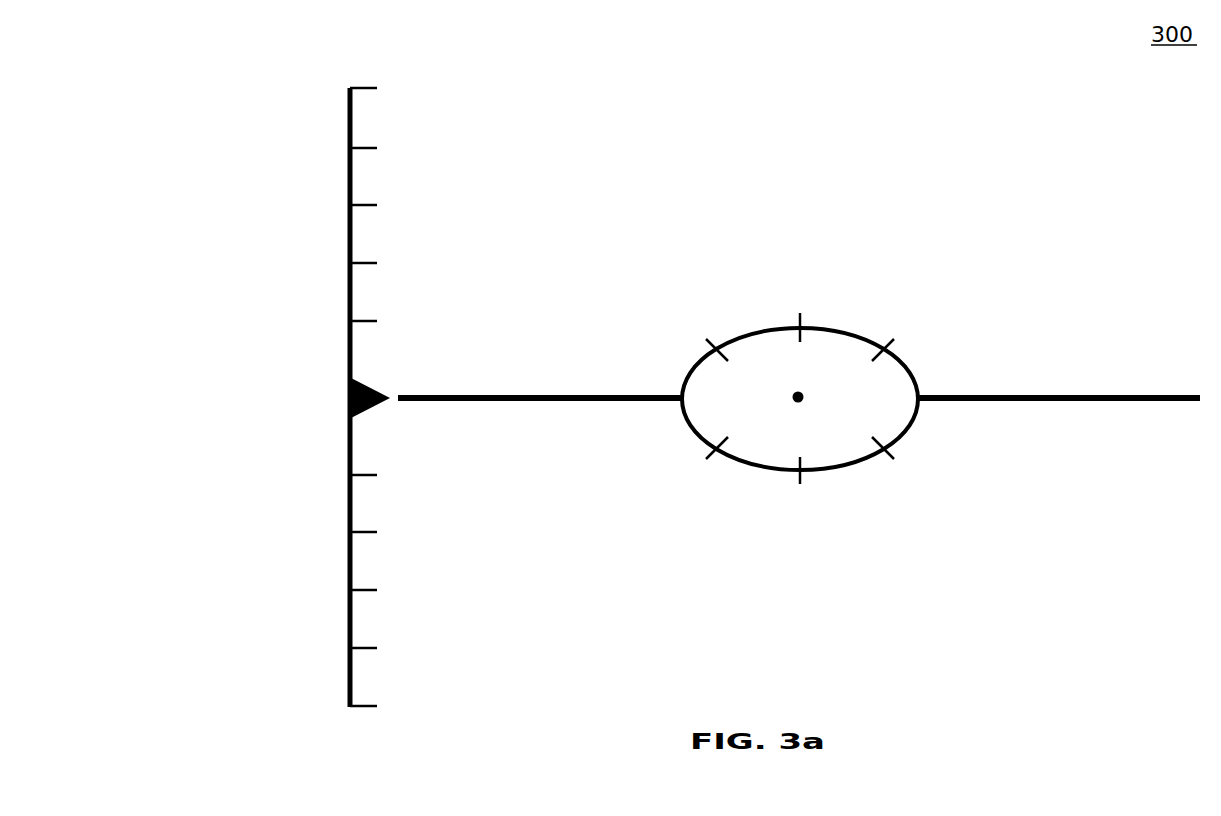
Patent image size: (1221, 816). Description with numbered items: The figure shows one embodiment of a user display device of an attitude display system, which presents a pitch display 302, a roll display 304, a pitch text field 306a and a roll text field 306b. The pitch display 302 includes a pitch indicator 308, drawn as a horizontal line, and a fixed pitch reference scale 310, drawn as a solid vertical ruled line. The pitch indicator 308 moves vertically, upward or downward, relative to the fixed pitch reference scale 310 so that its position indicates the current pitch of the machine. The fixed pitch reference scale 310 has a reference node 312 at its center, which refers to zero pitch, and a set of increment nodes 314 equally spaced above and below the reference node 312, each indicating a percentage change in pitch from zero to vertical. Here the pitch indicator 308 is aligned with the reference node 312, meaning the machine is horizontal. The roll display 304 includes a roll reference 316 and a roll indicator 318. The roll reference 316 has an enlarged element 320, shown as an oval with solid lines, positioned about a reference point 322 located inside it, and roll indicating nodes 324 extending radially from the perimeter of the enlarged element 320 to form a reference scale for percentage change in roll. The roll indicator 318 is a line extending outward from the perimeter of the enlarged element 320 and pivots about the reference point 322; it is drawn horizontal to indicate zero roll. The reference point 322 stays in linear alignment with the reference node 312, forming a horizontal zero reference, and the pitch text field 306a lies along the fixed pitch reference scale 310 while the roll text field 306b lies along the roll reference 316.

The pitch display 302 is at (423, 333).
The roll display 304 is at (836, 193).
The pitch text field 306a is at (300, 378).
The roll text field 306b is at (795, 448).
The pitch indicator 308 is at (523, 403).
The fixed pitch reference scale 310 is at (349, 126).
The reference node 312 is at (367, 384).
The increment nodes 314 is at (365, 205).
The roll reference 316 is at (900, 327).
The roll indicator 318 is at (958, 398).
The enlarged element 320 is at (910, 425).
The reference point 322 is at (791, 398).
The roll indicating nodes 324 is at (890, 456).